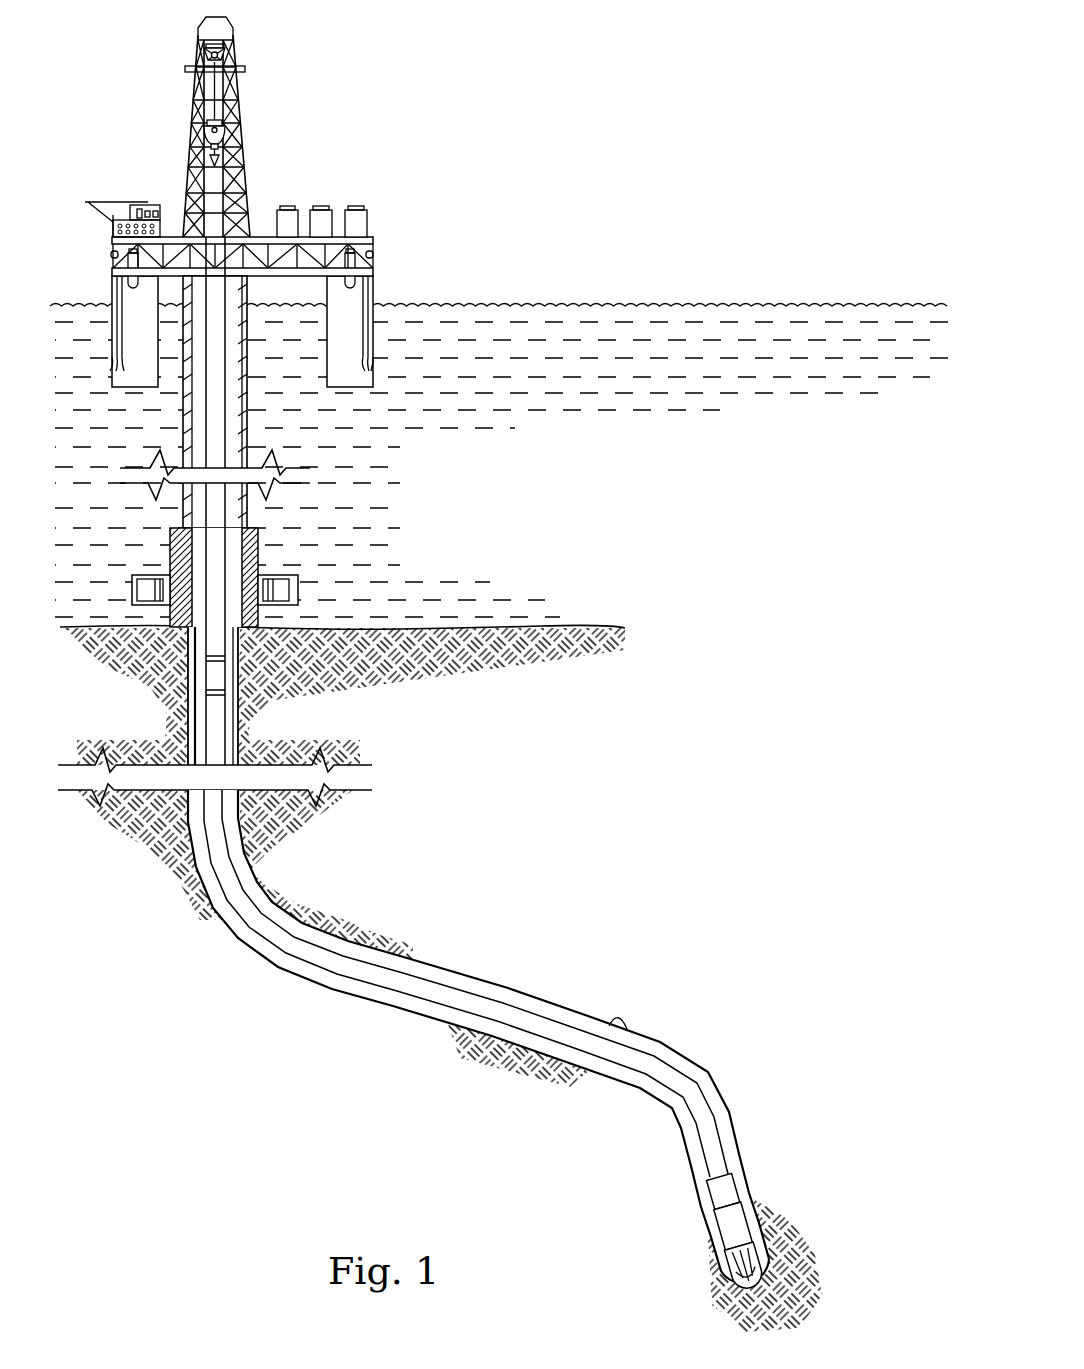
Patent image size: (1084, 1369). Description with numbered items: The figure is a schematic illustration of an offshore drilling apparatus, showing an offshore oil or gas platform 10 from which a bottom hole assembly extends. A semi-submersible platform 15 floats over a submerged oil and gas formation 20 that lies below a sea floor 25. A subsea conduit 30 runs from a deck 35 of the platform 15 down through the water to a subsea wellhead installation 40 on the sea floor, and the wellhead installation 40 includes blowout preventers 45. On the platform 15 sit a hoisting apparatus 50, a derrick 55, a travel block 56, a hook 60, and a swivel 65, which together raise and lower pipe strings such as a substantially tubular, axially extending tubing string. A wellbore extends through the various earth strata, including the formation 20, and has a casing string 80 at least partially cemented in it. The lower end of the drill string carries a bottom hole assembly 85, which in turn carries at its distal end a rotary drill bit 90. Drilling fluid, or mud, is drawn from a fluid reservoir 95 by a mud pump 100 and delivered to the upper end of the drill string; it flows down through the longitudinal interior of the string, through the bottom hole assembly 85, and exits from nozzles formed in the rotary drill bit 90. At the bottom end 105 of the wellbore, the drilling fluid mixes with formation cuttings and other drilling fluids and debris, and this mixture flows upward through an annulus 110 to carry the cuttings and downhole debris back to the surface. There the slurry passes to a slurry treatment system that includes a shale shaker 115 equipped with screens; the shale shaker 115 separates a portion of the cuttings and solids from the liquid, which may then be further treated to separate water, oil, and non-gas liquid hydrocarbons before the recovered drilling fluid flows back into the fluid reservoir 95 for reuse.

The offshore oil or gas platform 10 is at (498, 676).
The semi-submersible platform 15 is at (270, 294).
The oil and gas formation 20 is at (842, 1161).
The sea floor 25 is at (592, 627).
The subsea conduit 30 is at (248, 426).
The deck 35 is at (383, 270).
The subsea wellhead installation 40 is at (166, 553).
The blowout preventers 45 is at (140, 590).
The hoisting apparatus 50 is at (212, 215).
The derrick 55 is at (198, 52).
The travel block 56 is at (224, 98).
The hook 60 is at (197, 142).
The swivel 65 is at (222, 152).
The casing string 80 is at (238, 715).
The bottom hole assembly 85 is at (745, 1242).
The rotary drill bit 90 is at (762, 1276).
The fluid reservoir 95 is at (322, 206).
The mud pump 100 is at (357, 206).
The bottom end 105 is at (755, 1292).
The annulus 110 is at (690, 1058).
The shale shaker 115 is at (289, 206).